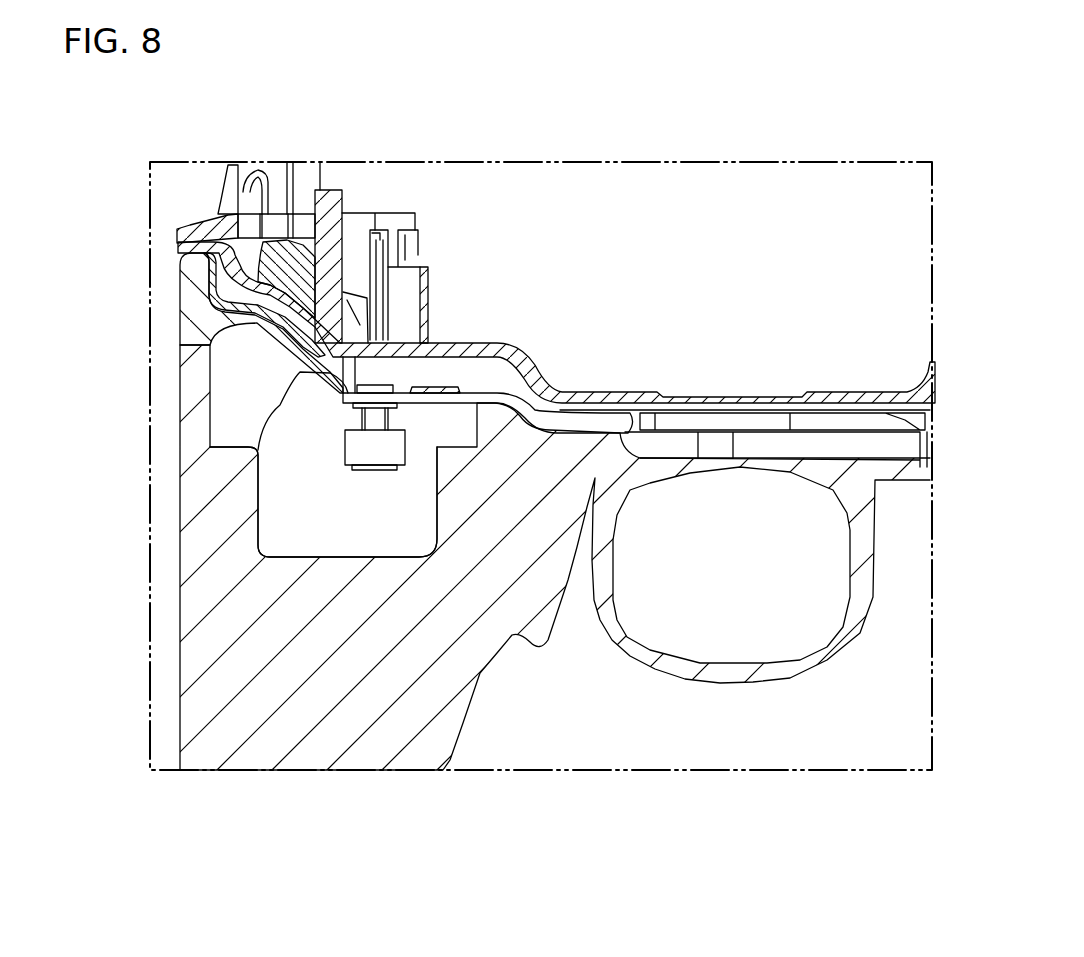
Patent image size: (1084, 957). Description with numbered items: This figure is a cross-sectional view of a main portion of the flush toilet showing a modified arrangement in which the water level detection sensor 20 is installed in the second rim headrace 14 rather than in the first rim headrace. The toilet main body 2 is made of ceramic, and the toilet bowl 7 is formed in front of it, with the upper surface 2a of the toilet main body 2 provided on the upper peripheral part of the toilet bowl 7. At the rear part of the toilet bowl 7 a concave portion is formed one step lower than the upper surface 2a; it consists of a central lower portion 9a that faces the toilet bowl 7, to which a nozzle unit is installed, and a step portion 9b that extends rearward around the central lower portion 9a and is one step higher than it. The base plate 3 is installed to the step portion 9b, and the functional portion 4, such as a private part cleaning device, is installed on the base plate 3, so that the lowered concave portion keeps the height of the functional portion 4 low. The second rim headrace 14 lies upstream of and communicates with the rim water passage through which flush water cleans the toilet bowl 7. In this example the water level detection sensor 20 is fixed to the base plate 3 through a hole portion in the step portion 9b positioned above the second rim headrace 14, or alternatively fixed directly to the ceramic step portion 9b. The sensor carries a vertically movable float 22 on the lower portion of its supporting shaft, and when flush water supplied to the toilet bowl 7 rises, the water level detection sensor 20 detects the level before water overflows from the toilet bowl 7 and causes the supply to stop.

The toilet main body 2 is at (180, 625).
The upper surface 2a is at (325, 375).
The base plate 3 is at (307, 332).
The functional portion 4 is at (617, 367).
The toilet bowl 7 is at (723, 680).
The central lower portion 9a is at (757, 410).
The step portion 9b is at (477, 387).
The second rim headrace 14 is at (355, 440).
The water level detection sensor 20 is at (277, 408).
The float 22 is at (262, 458).